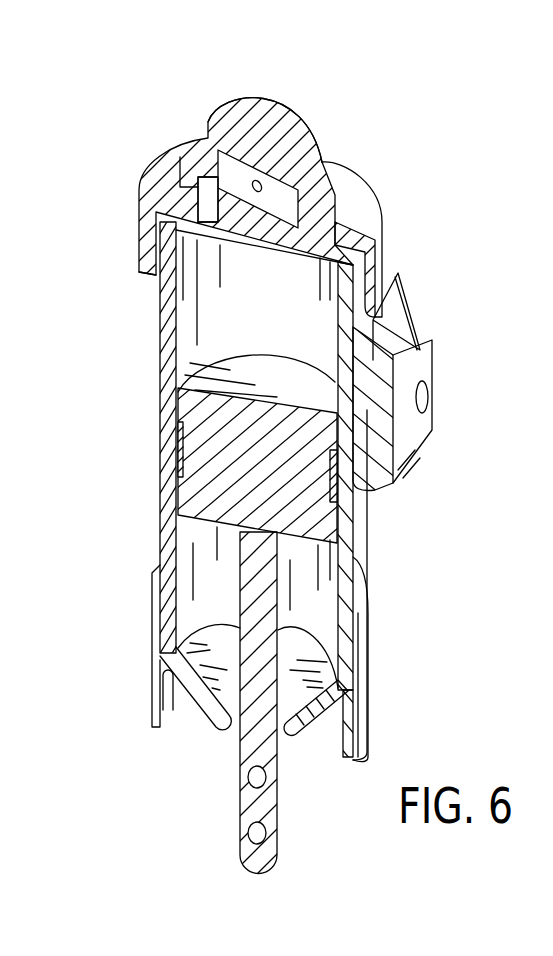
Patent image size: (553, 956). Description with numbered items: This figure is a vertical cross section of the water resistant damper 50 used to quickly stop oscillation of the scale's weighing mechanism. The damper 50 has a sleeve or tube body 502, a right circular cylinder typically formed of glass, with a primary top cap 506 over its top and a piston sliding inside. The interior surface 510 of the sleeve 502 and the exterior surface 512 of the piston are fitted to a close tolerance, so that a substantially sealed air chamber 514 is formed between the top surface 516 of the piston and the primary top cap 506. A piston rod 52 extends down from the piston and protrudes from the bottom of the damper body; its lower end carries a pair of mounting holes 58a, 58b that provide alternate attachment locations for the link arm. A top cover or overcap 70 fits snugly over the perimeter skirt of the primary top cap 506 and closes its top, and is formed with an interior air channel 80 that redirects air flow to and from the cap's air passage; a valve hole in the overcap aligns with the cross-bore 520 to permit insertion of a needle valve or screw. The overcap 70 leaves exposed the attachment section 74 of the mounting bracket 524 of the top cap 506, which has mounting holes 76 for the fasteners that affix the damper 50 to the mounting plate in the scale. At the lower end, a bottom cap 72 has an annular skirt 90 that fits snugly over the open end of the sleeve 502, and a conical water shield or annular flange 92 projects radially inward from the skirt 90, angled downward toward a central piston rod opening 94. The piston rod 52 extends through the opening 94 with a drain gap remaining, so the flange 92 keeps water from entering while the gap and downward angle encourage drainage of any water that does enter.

The damper 50 is at (276, 465).
The piston rod 52 is at (283, 626).
The first aperture 58a is at (247, 778).
The second aperture 58b is at (247, 832).
The overcap 70 is at (358, 178).
The bottom cap 72 is at (368, 661).
The attachment section 74 is at (418, 425).
The mounting holes 76 is at (428, 397).
The air channel 80 is at (200, 187).
The annular skirt 90 is at (157, 622).
The annular flange 92 is at (200, 706).
The piston rod opening 94 is at (237, 722).
The sleeve 502 is at (355, 532).
The primary top cap 506 is at (168, 214).
The interior surface 510 is at (188, 335).
The exterior surface 512 is at (180, 395).
The air chamber 514 is at (229, 300).
The top surface 516 is at (264, 370).
The cross-bore 520 is at (256, 182).
The bracket 524 is at (414, 320).